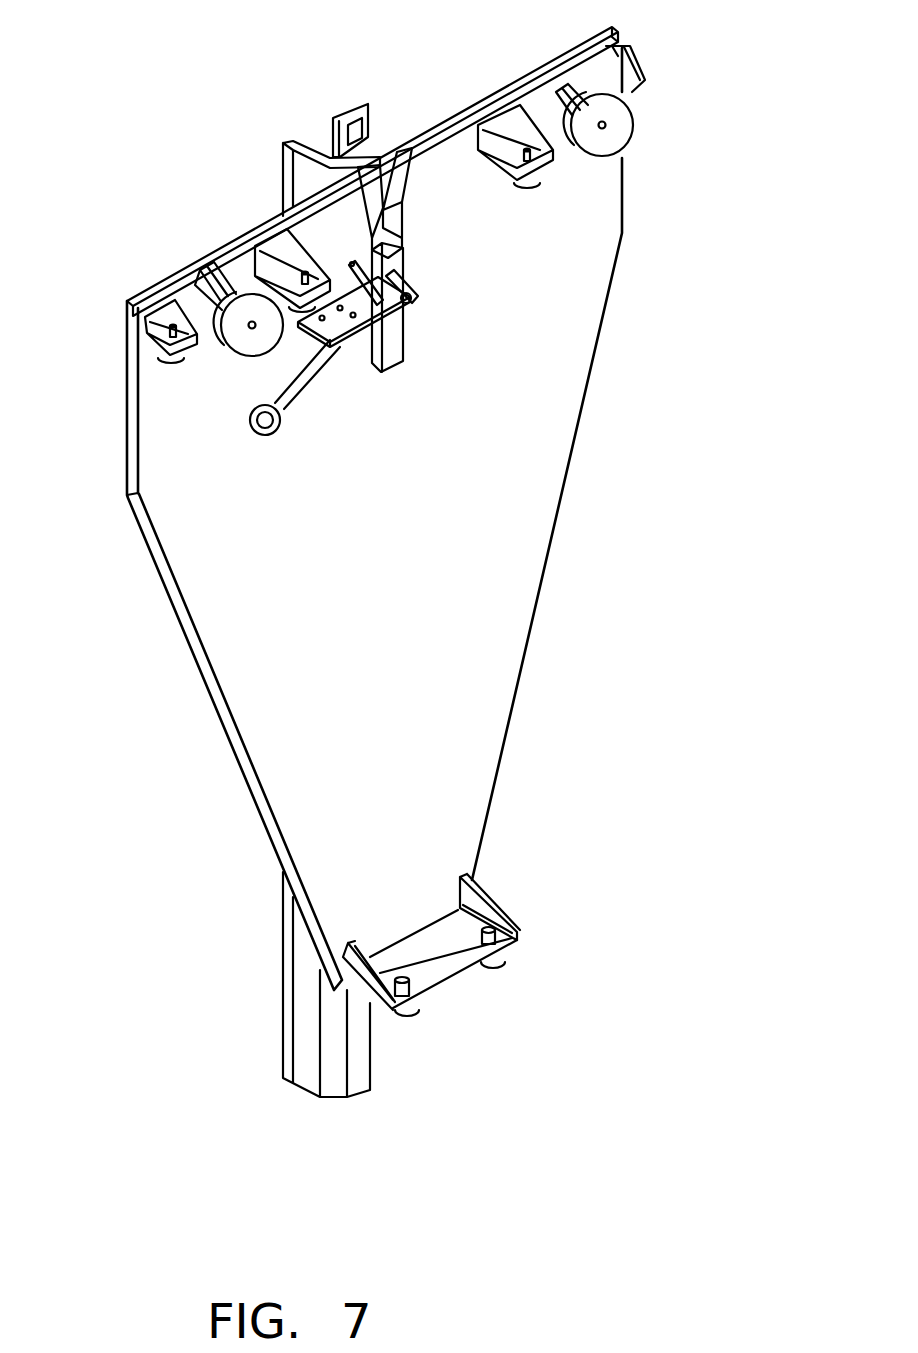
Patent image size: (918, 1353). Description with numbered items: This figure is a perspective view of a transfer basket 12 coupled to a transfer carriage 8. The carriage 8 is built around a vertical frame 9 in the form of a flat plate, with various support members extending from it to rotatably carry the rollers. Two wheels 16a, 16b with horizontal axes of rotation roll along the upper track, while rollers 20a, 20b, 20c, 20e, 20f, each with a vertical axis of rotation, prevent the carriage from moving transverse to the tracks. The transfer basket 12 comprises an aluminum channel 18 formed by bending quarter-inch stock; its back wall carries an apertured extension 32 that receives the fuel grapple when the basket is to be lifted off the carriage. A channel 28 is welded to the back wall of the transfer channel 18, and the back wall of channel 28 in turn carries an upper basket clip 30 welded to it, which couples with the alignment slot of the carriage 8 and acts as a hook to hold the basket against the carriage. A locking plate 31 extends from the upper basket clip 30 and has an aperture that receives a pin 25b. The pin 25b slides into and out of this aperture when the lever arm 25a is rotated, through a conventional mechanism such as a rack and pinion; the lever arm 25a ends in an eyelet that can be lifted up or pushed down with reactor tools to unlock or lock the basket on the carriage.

The transfer carriage 8 is at (596, 414).
The vertical frame 9 is at (558, 520).
The transfer basket 12 is at (299, 118).
The aluminum channel 18 is at (282, 196).
The apertured extension 32 is at (350, 108).
The channel 28 is at (382, 150).
The upper basket clip 30 is at (402, 333).
The locking plate 31 is at (400, 273).
The lever arm 25a is at (302, 388).
The pin 25b is at (416, 297).
The wheel 16a is at (590, 160).
The wheel 16b is at (221, 353).
The roller 20a is at (160, 357).
The roller 20b is at (292, 330).
The roller 20c is at (528, 186).
The roller 20e is at (412, 1016).
The roller 20f is at (505, 962).